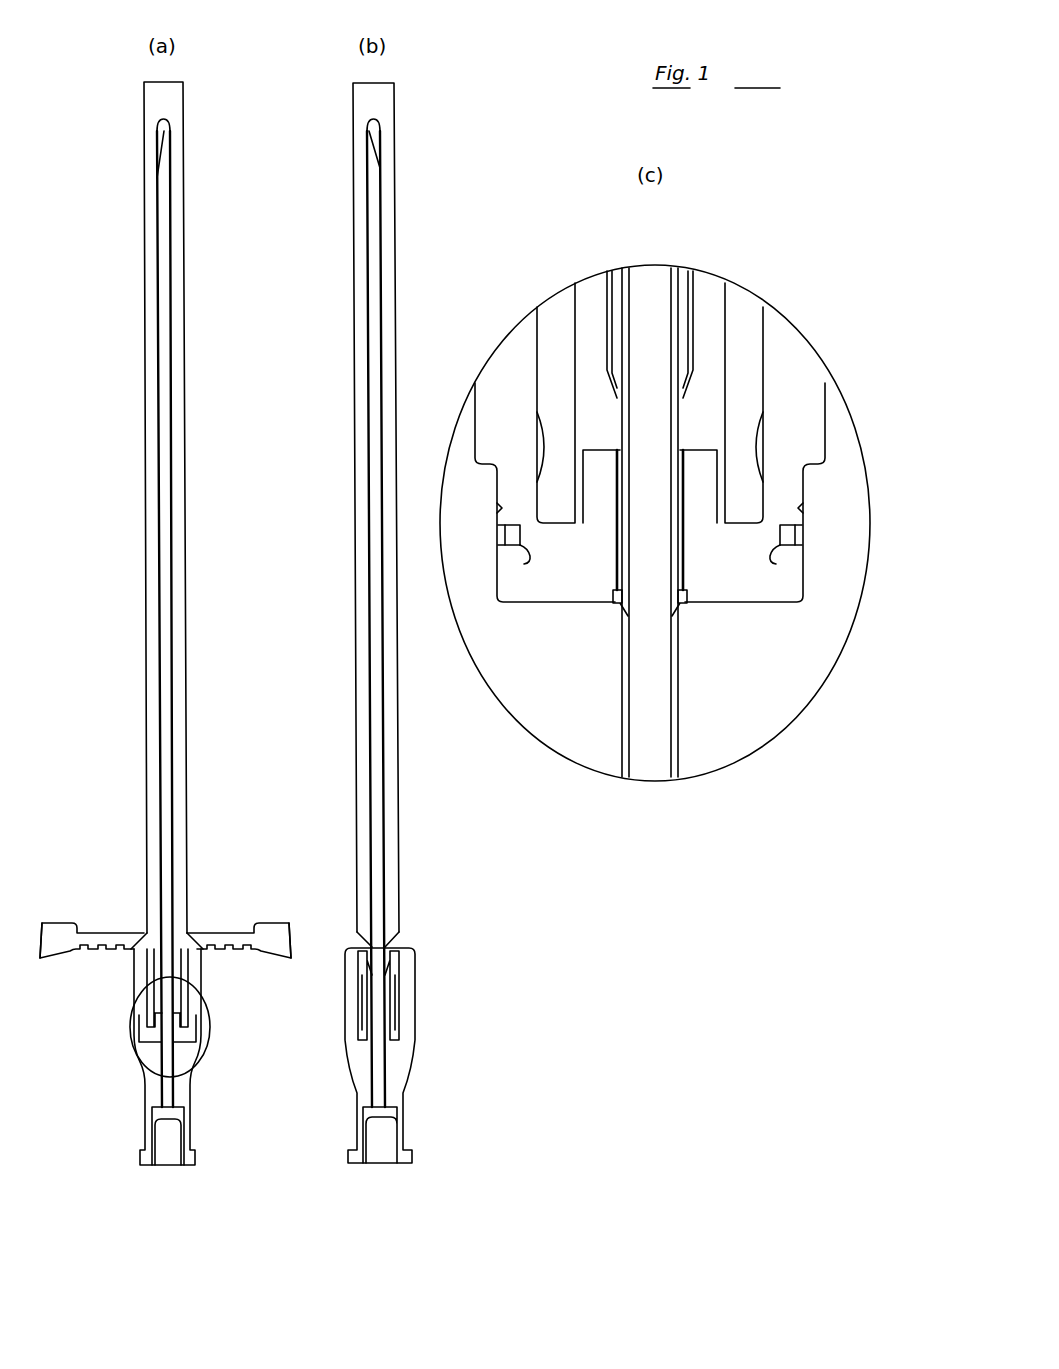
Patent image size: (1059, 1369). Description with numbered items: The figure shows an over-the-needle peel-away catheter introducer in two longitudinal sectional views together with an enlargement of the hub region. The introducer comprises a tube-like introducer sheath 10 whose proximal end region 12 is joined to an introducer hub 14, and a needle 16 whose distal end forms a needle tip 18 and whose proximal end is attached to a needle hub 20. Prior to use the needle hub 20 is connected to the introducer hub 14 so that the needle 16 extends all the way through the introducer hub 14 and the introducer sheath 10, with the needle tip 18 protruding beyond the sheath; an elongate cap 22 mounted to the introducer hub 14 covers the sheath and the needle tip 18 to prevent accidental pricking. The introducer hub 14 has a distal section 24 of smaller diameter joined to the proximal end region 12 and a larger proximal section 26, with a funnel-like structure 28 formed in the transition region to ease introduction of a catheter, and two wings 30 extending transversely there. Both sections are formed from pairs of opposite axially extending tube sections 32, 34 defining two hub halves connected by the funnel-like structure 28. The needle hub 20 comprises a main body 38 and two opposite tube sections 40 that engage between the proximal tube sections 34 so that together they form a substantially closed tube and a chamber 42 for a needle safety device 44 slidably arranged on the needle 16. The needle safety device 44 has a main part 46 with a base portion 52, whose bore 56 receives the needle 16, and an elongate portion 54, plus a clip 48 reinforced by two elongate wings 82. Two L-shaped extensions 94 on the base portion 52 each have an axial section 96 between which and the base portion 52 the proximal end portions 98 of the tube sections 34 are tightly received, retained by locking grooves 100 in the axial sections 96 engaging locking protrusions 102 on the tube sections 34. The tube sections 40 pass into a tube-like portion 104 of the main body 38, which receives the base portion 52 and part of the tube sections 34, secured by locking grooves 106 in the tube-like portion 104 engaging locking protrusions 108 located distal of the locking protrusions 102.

The introducer sheath 10 is at (171, 245).
The proximal end region 12 is at (175, 910).
The introducer hub 14 is at (135, 933).
The needle 16 is at (160, 307).
The needle tip 18 is at (176, 122).
The needle hub 20 is at (143, 1085).
The elongate cap 22 is at (186, 372).
The distal section 24 is at (182, 893).
The proximal section 26 is at (137, 978).
The funnel-like structure 28 is at (203, 948).
The wings 30 is at (75, 925).
The distal tube sections 32 is at (145, 905).
The proximal tube sections 34 is at (136, 973).
The main body 38 is at (405, 1115).
The tube sections 40 is at (352, 1003).
The chamber 42 is at (150, 1020).
The needle safety device 44 is at (402, 996).
The main part 46 is at (415, 1055).
The clip 48 is at (365, 975).
The base portion 52 is at (365, 1025).
The elongate portion 54 is at (408, 966).
The bore 56 is at (690, 560).
The elongate wings 82 is at (612, 295).
The L-shaped extensions 94 is at (520, 582).
The axial section 96 is at (503, 533).
The proximal end portions 98 is at (532, 562).
The locking grooves 100 is at (525, 548).
The locking protrusions 102 is at (520, 542).
The tube-like portion 104 is at (200, 1022).
The locking grooves 106 is at (540, 418).
The locking protrusions 108 is at (513, 450).